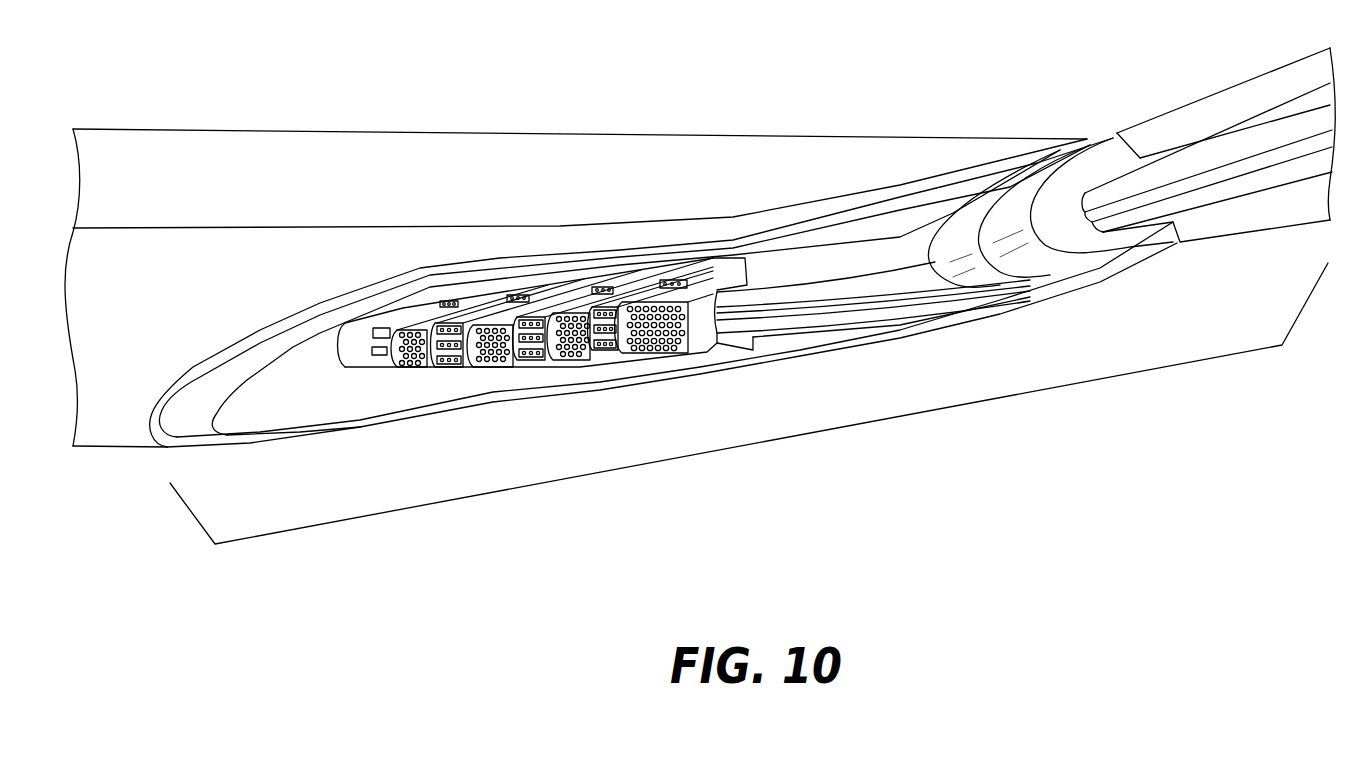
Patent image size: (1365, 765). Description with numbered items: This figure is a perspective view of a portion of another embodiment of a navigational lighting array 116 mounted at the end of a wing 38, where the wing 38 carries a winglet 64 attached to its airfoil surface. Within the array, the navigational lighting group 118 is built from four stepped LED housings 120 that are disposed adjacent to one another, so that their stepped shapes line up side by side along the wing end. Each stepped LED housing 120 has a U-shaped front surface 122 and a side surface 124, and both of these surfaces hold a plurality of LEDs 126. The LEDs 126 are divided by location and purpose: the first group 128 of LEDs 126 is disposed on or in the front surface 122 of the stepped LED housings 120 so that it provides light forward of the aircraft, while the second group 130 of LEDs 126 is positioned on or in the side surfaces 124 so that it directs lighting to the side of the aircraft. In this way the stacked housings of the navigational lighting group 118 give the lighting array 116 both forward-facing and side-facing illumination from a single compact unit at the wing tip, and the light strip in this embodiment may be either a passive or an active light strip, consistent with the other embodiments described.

The wing 38 is at (457, 148).
The winglet 64 is at (1213, 107).
The navigational lighting array 116 is at (705, 453).
The navigational lighting group 118 is at (497, 412).
The stepped LED housings 120 is at (473, 287).
The U-shaped front surface 122 is at (433, 347).
The side surface 124 is at (570, 355).
The LEDs 126 is at (673, 307).
The first group of LEDs 128 is at (497, 363).
The second group of LEDs 130 is at (660, 362).